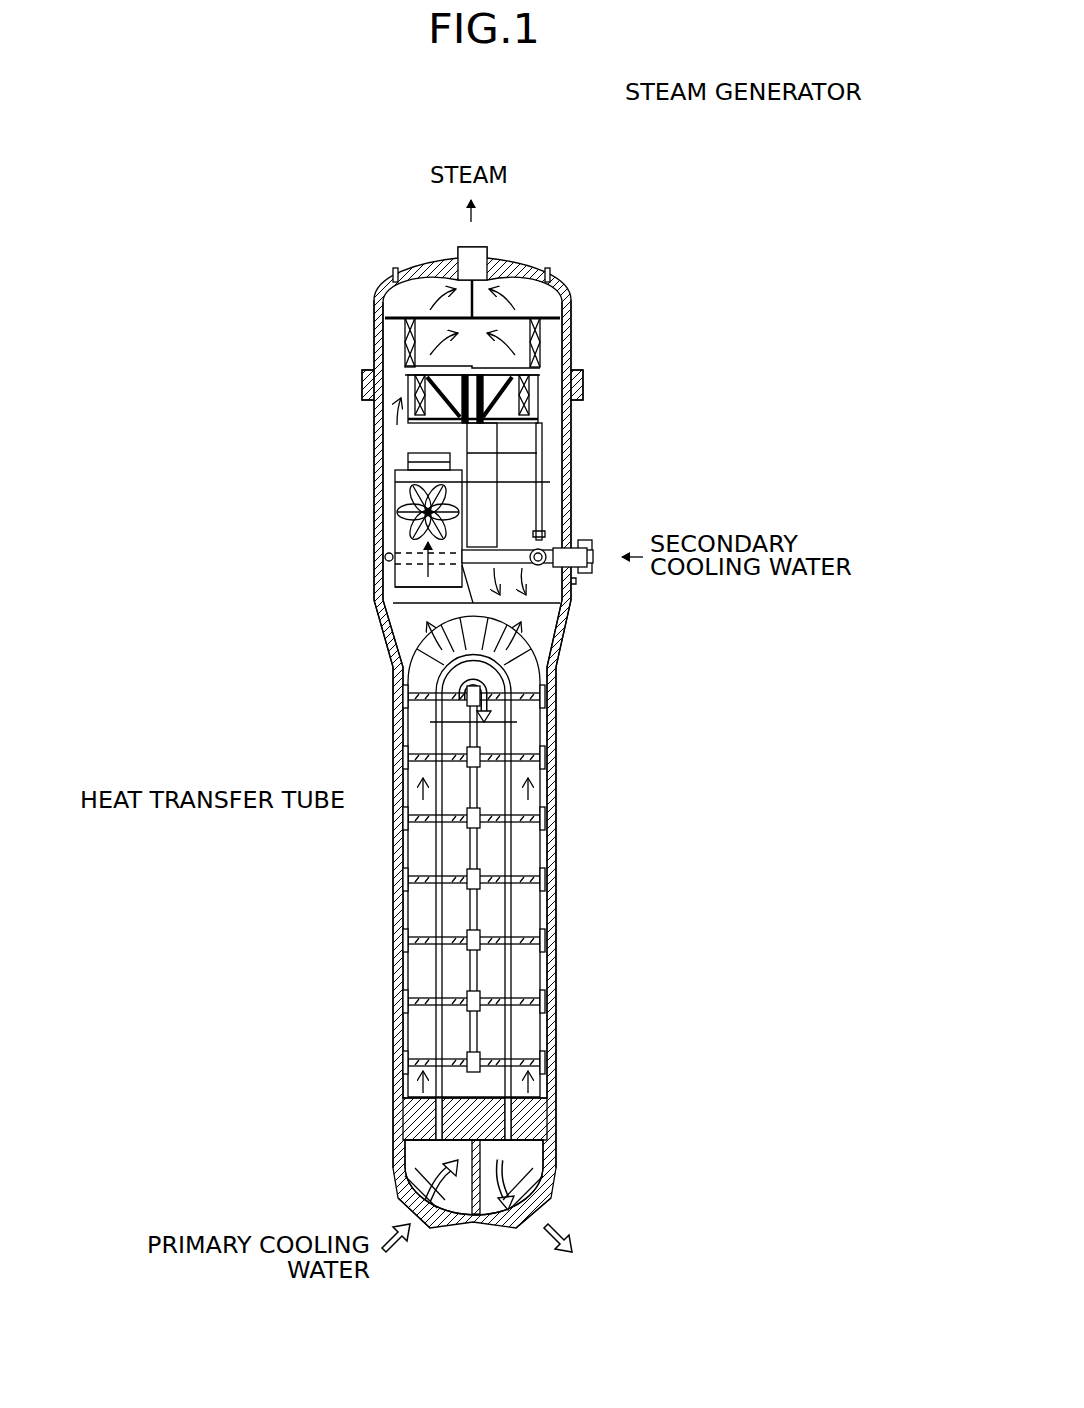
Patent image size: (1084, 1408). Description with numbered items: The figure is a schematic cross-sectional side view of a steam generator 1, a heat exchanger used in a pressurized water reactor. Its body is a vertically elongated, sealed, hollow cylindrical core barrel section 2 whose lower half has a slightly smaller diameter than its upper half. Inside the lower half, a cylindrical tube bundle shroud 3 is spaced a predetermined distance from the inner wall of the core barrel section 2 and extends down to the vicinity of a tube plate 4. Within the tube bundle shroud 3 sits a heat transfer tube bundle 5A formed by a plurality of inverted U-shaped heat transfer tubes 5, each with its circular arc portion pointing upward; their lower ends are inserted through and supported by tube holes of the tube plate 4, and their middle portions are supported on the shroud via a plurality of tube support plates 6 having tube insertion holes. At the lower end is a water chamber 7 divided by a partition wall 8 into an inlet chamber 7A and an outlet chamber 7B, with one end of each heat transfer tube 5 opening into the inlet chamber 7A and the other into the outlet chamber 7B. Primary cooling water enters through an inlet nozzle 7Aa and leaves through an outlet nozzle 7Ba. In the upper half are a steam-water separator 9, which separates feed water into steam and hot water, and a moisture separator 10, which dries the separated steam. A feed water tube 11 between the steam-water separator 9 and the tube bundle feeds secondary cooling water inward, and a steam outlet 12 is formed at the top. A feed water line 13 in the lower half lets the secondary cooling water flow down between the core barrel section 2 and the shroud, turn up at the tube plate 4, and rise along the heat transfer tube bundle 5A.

The steam generator 1 is at (719, 162).
The core barrel section 2 is at (375, 420).
The tube bundle shroud 3 is at (386, 640).
The tube plate 4 is at (557, 1112).
The heat transfer tube 5 is at (435, 845).
The heat transfer tube bundle 5A is at (550, 655).
The tube support plate 6 is at (527, 752).
The water chamber 7 is at (512, 1160).
The inlet chamber 7A is at (399, 1168).
The outlet chamber 7B is at (533, 1157).
The inlet nozzle 7Aa is at (420, 1218).
The outlet nozzle 7Ba is at (540, 1218).
The partition wall 8 is at (479, 1215).
The steam-water separator 9 is at (400, 505).
The moisture separator 10 is at (512, 347).
The feed water tube 11 is at (590, 543).
The steam outlet 12 is at (472, 256).
The feed water line 13 is at (400, 1025).